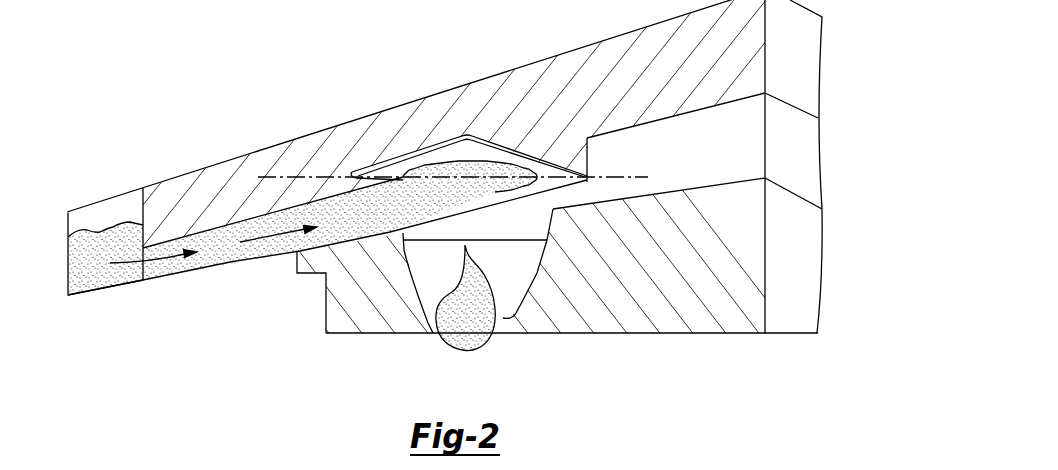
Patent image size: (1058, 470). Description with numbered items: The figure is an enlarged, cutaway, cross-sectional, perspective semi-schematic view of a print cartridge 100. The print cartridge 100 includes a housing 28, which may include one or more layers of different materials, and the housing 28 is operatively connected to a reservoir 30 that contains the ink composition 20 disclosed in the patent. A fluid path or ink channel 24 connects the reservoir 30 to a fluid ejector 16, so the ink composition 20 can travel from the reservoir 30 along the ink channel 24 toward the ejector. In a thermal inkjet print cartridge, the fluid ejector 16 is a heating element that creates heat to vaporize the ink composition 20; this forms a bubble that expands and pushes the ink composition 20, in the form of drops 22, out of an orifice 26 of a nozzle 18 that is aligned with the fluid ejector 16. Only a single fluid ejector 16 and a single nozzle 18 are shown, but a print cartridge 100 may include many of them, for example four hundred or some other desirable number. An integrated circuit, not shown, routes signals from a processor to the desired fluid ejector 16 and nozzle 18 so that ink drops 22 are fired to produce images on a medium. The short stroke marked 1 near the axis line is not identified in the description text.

The print cartridge 100 is at (160, 120).
The fluid ejector 16 is at (463, 146).
The orifice 26 is at (503, 176).
The ink composition 20 is at (90, 253).
The fluid path/ink channel 24 is at (220, 257).
The reservoir 30 is at (108, 287).
The housing 28 is at (350, 304).
The drops 22 is at (460, 332).
The nozzle 18 is at (503, 318).
The axis 1 is at (608, 178).